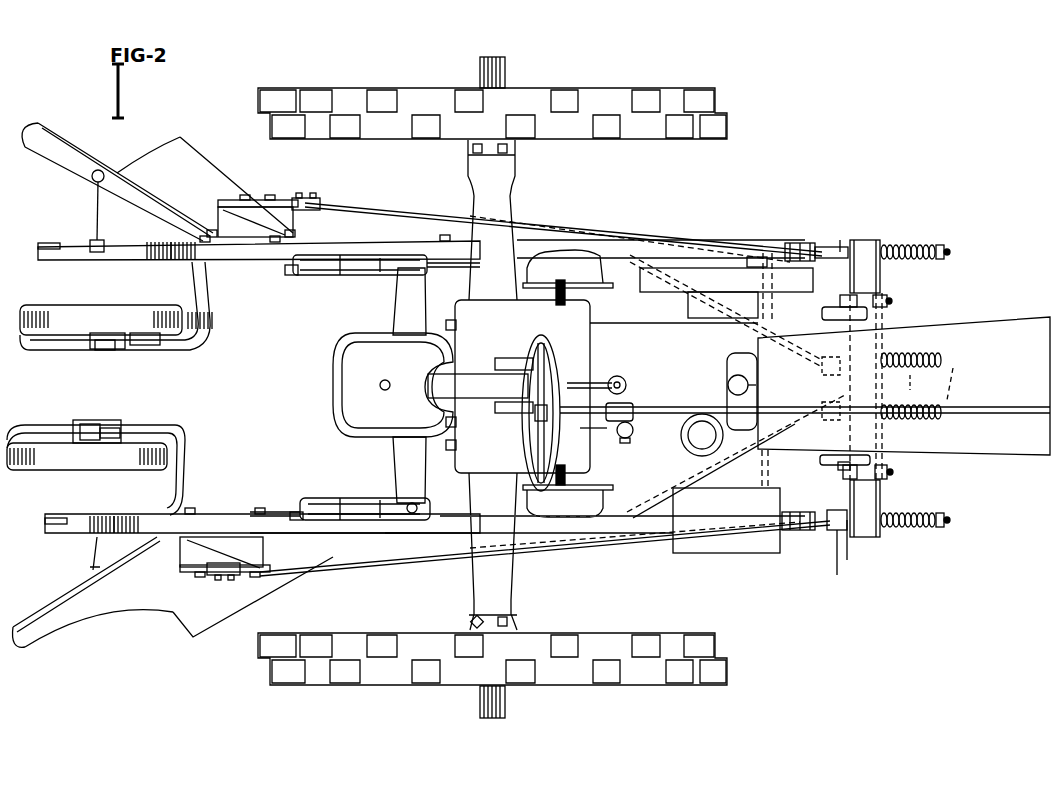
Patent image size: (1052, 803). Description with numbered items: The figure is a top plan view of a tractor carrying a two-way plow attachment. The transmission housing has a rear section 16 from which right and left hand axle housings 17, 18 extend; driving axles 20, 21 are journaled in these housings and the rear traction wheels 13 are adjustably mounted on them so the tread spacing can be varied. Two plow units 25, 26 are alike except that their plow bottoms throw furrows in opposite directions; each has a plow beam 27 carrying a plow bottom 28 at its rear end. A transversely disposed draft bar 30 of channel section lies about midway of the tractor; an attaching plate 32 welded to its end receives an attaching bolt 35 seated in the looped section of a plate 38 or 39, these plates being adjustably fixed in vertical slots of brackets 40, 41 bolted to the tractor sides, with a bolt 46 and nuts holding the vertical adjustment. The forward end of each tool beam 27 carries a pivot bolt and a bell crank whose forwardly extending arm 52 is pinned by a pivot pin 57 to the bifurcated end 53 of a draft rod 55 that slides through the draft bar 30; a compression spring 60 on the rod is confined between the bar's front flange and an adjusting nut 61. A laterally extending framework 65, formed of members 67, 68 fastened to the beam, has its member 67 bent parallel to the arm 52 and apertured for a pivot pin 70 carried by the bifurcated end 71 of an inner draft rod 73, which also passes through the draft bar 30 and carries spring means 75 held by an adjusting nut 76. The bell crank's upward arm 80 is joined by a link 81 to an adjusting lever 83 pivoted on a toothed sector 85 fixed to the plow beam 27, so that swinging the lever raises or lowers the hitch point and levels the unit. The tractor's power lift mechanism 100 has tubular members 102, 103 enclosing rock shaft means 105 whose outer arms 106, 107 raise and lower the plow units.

The rear traction wheels 13 is at (603, 99).
The rear section 16 is at (470, 468).
The right hand axle housing 17 is at (495, 585).
The left hand axle housing 18 is at (512, 213).
The driving axle 20 is at (505, 703).
The driving axle 21 is at (505, 72).
The two-way plow unit 25 is at (223, 504).
The two-way plow unit 26 is at (285, 192).
The plow beam 27 is at (372, 215).
The plow bottom 28 is at (148, 162).
The draft bar 30 is at (866, 240).
The attaching plate 32 is at (890, 287).
The attaching bolt 35 is at (892, 301).
The plate 38 is at (840, 455).
The plate 39 is at (843, 295).
The bracket 40 is at (831, 465).
The bracket 41 is at (822, 313).
The bolt 46 is at (843, 472).
The bell crank arm 52 is at (830, 247).
The bifurcated end 53 is at (857, 542).
The draft rod 55 is at (950, 252).
The pivot pin 57 is at (844, 404).
The compression spring 60 is at (918, 238).
The adjusting nut 61 is at (942, 245).
The laterally extending framework 65 is at (684, 299).
The framework member 67 is at (745, 330).
The framework member 68 is at (750, 262).
The pivot pin 70 is at (904, 386).
The bifurcated end 71 is at (866, 386).
The inner draft rod 73 is at (956, 382).
The spring means 75 is at (907, 386).
The adjusting nut 76 is at (950, 350).
The bell crank arm 80 is at (800, 243).
The link 81 is at (672, 222).
The adjusting lever 83 is at (312, 195).
The sector 85 is at (258, 200).
The power lift mechanism 100 is at (444, 448).
The tubular member 102 is at (410, 307).
The tubular member 103 is at (405, 452).
The rock shaft means 105 is at (395, 533).
The arm 106 is at (345, 498).
The arm 107 is at (352, 250).